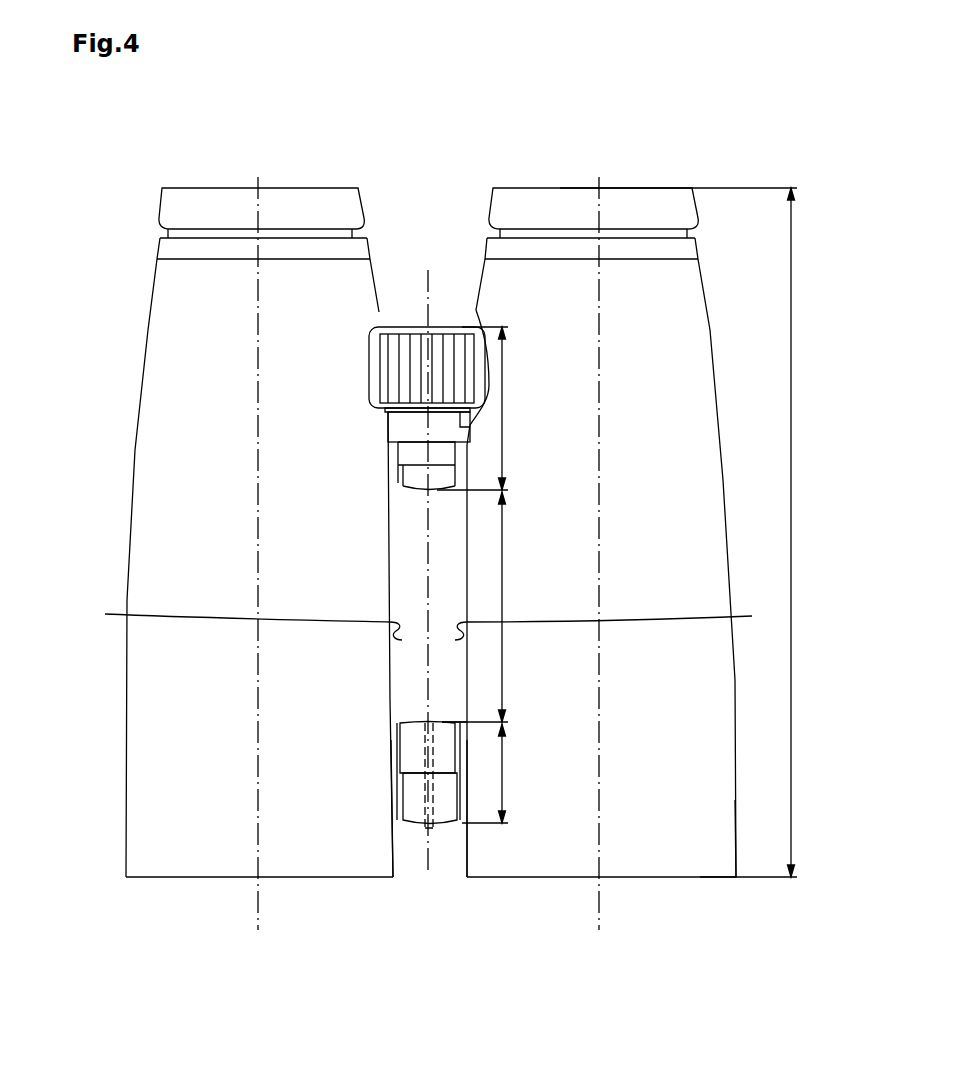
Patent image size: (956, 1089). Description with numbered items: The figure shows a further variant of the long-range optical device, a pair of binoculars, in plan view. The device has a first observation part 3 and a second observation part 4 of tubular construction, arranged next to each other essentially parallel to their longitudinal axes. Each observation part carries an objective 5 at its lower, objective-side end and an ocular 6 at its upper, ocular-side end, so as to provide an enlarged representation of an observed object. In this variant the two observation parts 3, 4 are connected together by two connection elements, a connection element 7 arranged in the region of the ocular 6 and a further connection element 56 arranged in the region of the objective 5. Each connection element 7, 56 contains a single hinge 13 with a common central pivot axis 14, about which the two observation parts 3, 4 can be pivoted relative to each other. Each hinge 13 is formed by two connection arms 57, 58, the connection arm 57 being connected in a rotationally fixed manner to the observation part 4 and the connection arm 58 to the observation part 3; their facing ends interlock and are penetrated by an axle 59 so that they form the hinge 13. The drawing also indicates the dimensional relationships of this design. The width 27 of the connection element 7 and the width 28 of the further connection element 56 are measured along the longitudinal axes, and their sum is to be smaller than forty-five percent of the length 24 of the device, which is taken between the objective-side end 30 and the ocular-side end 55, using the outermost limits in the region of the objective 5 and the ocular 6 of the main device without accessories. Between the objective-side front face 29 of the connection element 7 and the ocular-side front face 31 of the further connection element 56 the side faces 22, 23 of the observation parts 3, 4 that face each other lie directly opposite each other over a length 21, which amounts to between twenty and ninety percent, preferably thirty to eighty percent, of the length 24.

The first observation part 3 is at (680, 378).
The second observation part 4 is at (193, 362).
The objective 5 is at (295, 884).
The ocular 6 is at (282, 176).
The connection element 7 is at (386, 427).
The hinge 13 is at (410, 373).
The pivot axis 14 is at (422, 291).
The length 21 is at (505, 596).
The side face 22 is at (238, 619).
The side face 23 is at (619, 622).
The length 24 is at (792, 254).
The width 27 is at (505, 428).
The width 28 is at (505, 786).
The objective-side front face 29 is at (430, 490).
The objective-side end 30 is at (683, 879).
The ocular-side front face 31 is at (447, 718).
The ocular-side end 55 is at (638, 186).
The further connection element 56 is at (448, 810).
The connection arm 57 is at (400, 741).
The connection arm 58 is at (415, 797).
The axle 59 is at (422, 738).